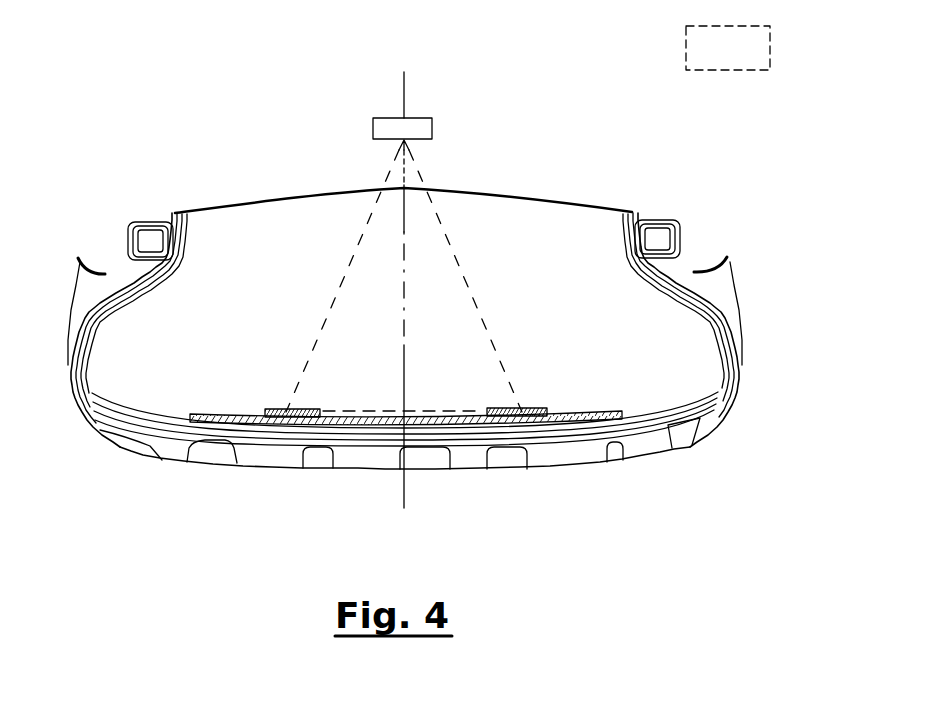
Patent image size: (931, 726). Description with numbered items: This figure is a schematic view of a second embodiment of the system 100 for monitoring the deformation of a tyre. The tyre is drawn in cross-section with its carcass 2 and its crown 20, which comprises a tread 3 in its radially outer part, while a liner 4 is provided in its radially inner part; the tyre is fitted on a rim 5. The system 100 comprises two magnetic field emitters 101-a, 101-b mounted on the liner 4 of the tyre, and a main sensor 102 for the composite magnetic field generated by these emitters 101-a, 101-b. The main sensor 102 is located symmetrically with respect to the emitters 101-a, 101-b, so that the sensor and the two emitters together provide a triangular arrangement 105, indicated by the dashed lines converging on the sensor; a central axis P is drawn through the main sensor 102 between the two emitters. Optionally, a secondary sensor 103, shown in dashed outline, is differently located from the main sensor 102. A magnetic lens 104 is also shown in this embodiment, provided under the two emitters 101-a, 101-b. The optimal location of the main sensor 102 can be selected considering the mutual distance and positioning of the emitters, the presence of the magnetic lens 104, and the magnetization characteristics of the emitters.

The system 100 is at (234, 124).
The carcass 2 is at (650, 416).
The tread 3 is at (268, 456).
The liner 4 is at (258, 414).
The rim 5 is at (254, 205).
The crown 20 is at (586, 467).
The magnetic field emitter 101-a is at (310, 410).
The magnetic field emitter 101-b is at (518, 408).
The main sensor 102 is at (430, 116).
The secondary sensor 103 is at (690, 70).
The magnetic lens 104 is at (197, 410).
The triangular arrangement 105 is at (480, 297).
The reference axis P is at (404, 86).